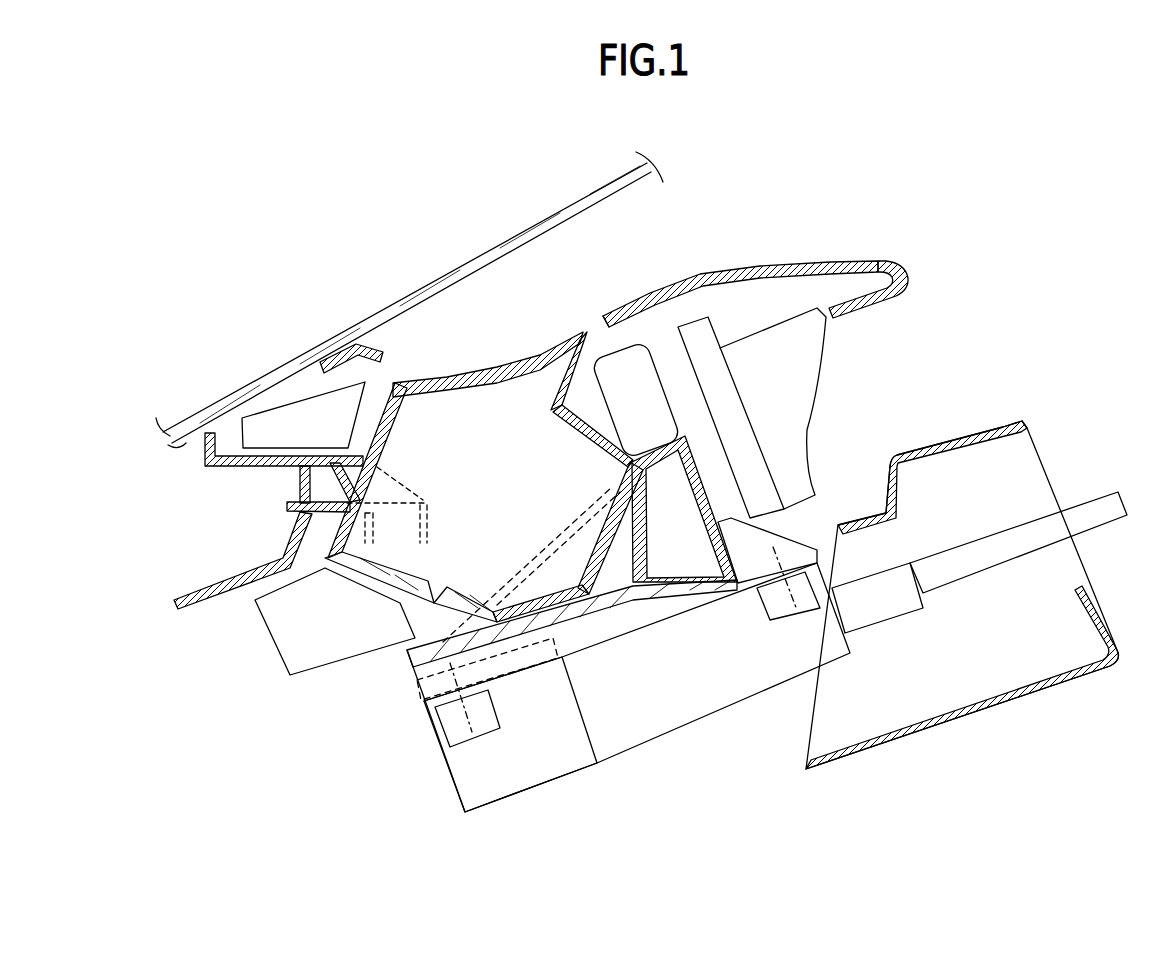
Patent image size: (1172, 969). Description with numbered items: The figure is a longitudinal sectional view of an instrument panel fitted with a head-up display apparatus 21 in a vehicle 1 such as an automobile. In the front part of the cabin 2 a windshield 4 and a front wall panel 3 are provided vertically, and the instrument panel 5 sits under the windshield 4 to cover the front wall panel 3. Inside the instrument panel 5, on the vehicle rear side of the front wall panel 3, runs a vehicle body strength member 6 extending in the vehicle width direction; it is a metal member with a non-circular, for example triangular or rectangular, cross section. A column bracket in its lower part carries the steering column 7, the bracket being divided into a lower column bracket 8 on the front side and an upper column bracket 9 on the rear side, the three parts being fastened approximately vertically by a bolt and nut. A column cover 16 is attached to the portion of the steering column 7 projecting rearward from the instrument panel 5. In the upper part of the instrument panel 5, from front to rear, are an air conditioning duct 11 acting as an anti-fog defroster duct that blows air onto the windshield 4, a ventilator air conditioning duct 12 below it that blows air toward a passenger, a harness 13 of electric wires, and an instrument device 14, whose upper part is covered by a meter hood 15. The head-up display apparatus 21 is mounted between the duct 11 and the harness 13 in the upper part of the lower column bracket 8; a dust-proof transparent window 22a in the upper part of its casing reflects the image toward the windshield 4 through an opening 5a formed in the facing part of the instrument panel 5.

The vehicle 1 is at (333, 201).
The cabin 2 is at (1156, 363).
The front wall panel 3 is at (200, 585).
The windshield 4 is at (452, 272).
The instrument panel 5 is at (630, 298).
The opening 5a is at (593, 323).
The vehicle body strength member 6 is at (683, 597).
The steering column 7 is at (530, 787).
The lower column bracket 8 is at (617, 573).
The upper column bracket 9 is at (748, 573).
The air conditioning duct 11 is at (283, 430).
The air conditioning duct 12 is at (290, 646).
The harness 13 is at (635, 378).
The instrument device 14 is at (805, 416).
The meter hood 15 is at (863, 262).
The column cover 16 is at (1048, 690).
The head-up display apparatus 21 is at (452, 328).
The transparent window 22a is at (518, 360).